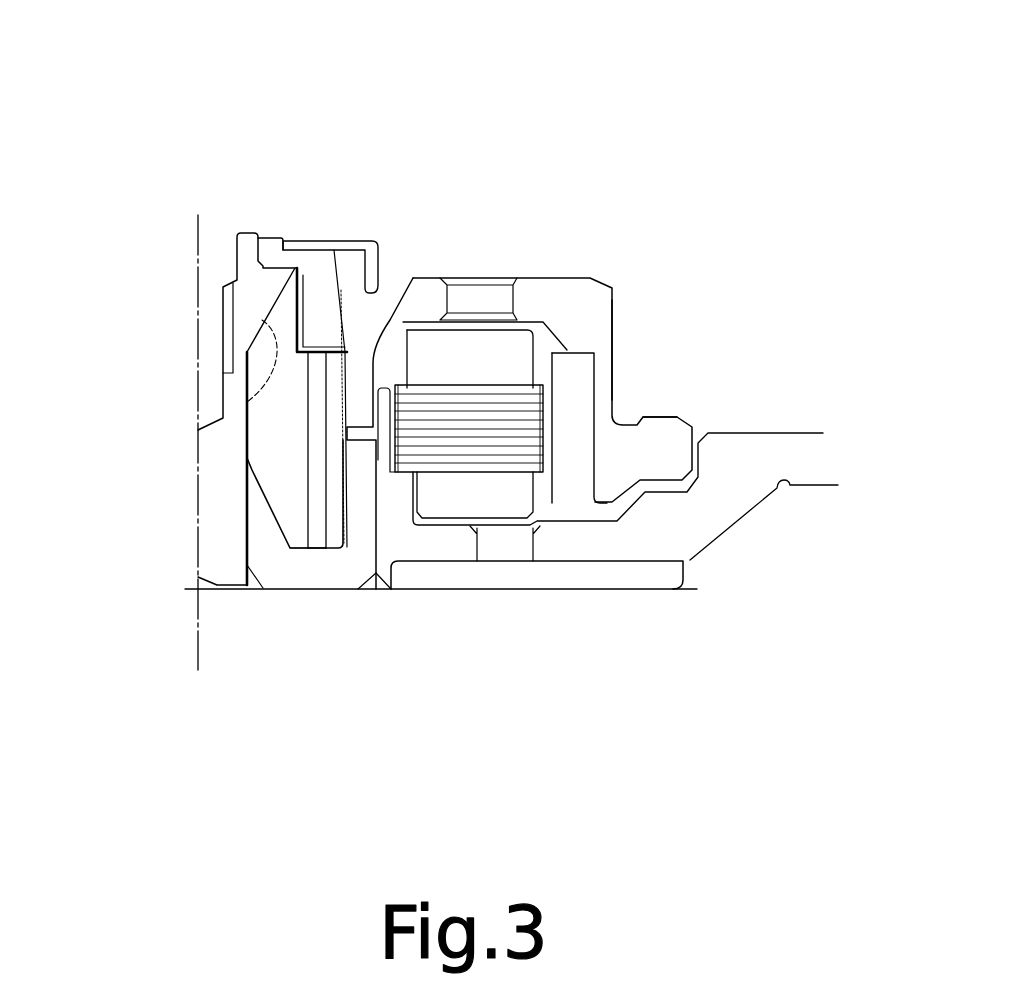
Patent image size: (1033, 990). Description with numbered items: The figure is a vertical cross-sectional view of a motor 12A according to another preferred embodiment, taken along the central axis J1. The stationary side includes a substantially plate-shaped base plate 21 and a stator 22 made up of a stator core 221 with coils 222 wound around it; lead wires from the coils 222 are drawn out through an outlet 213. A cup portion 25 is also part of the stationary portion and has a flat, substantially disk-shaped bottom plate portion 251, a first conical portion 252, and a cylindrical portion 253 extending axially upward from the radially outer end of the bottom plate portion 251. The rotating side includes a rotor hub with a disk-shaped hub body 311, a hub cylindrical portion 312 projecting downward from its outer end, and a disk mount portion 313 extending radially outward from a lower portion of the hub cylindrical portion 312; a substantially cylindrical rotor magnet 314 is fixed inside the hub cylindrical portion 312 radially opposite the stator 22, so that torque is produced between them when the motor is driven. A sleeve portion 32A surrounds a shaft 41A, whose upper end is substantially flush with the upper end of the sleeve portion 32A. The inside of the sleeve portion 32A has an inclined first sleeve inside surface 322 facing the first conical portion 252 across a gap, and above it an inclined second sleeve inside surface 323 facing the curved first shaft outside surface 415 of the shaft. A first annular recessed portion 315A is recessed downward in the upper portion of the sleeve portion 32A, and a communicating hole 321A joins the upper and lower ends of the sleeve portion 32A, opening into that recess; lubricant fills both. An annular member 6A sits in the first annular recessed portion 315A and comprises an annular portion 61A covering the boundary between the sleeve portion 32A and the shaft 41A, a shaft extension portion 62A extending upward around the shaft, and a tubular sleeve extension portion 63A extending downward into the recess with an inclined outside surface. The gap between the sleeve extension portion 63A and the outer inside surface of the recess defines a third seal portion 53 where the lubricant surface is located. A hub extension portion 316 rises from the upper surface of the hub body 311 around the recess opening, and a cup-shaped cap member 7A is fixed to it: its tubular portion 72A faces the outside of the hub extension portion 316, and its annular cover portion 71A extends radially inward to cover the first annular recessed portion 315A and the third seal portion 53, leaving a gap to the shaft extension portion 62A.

The central axis J1 is at (190, 218).
The shaft 41A is at (222, 262).
The first shaft outside surface 415 is at (232, 326).
The third seal portion 53 is at (347, 292).
The annular member 6A is at (256, 286).
The annular portion 61A is at (298, 262).
The shaft extension portion 62A is at (268, 243).
The sleeve extension portion 63A is at (317, 273).
The cap member 7A is at (388, 304).
The cover portion 71A is at (341, 250).
The tubular portion 72A is at (376, 240).
The sleeve portion 32A is at (222, 531).
The communicating hole 321A is at (317, 523).
The first sleeve inside surface 322 is at (268, 503).
The second sleeve inside surface 323 is at (250, 393).
The cup portion 25 is at (255, 651).
The bottom plate portion 251 is at (297, 577).
The first conical portion 252 is at (258, 530).
The cylindrical portion 253 is at (360, 520).
The hub body 311 is at (570, 280).
The hub cylindrical portion 312 is at (613, 357).
The disk mount portion 313 is at (668, 424).
The rotor magnet 314 is at (568, 365).
The first annular recessed portion 315A is at (380, 290).
The hub extension portion 316 is at (348, 292).
The stator 22 is at (624, 378).
The stator core 221 is at (495, 348).
The coils 222 is at (507, 500).
The motor 12A is at (600, 378).
The base plate 21 is at (810, 467).
The outlet 213 is at (515, 552).